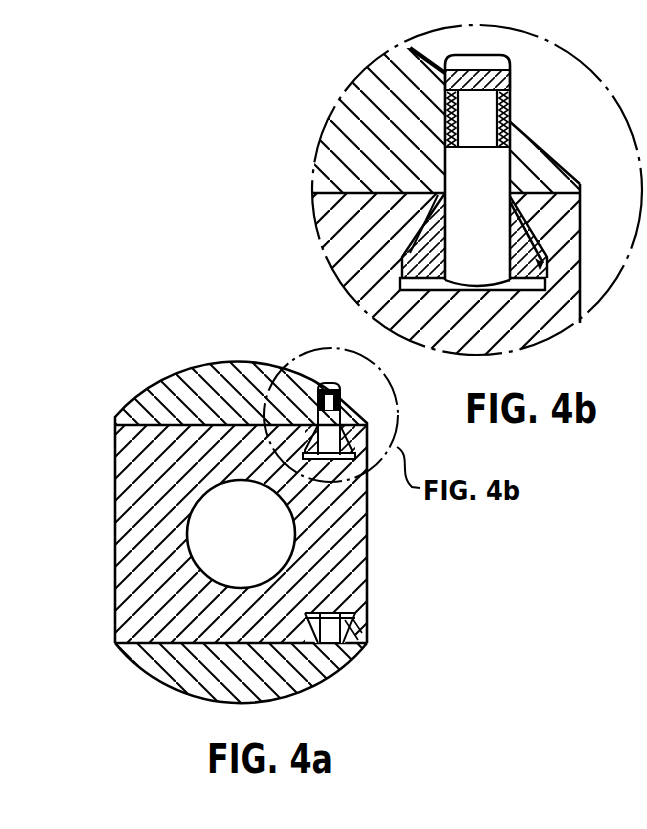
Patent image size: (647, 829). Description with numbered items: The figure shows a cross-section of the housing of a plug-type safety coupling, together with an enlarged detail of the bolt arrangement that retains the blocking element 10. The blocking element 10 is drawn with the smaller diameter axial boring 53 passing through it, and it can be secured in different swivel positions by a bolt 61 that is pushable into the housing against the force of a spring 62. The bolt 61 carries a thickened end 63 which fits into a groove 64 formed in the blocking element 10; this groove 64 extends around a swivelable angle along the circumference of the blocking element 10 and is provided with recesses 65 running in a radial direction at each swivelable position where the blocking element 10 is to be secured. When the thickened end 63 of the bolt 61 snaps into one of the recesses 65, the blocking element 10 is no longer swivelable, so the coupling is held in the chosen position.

In FIG. 4a, the blocking element 10 is at (204, 358).
In FIG. 4a, the smaller diameter axial boring 53 is at (195, 512).
In FIG. 4b, the bolt 61 is at (497, 162).
In FIG. 4b, the spring 62 is at (510, 98).
In FIG. 4b, the thickened end 63 is at (537, 276).
In FIG. 4a, the groove 64 is at (358, 642).
In FIG. 4b, the recesses 65 is at (542, 222).